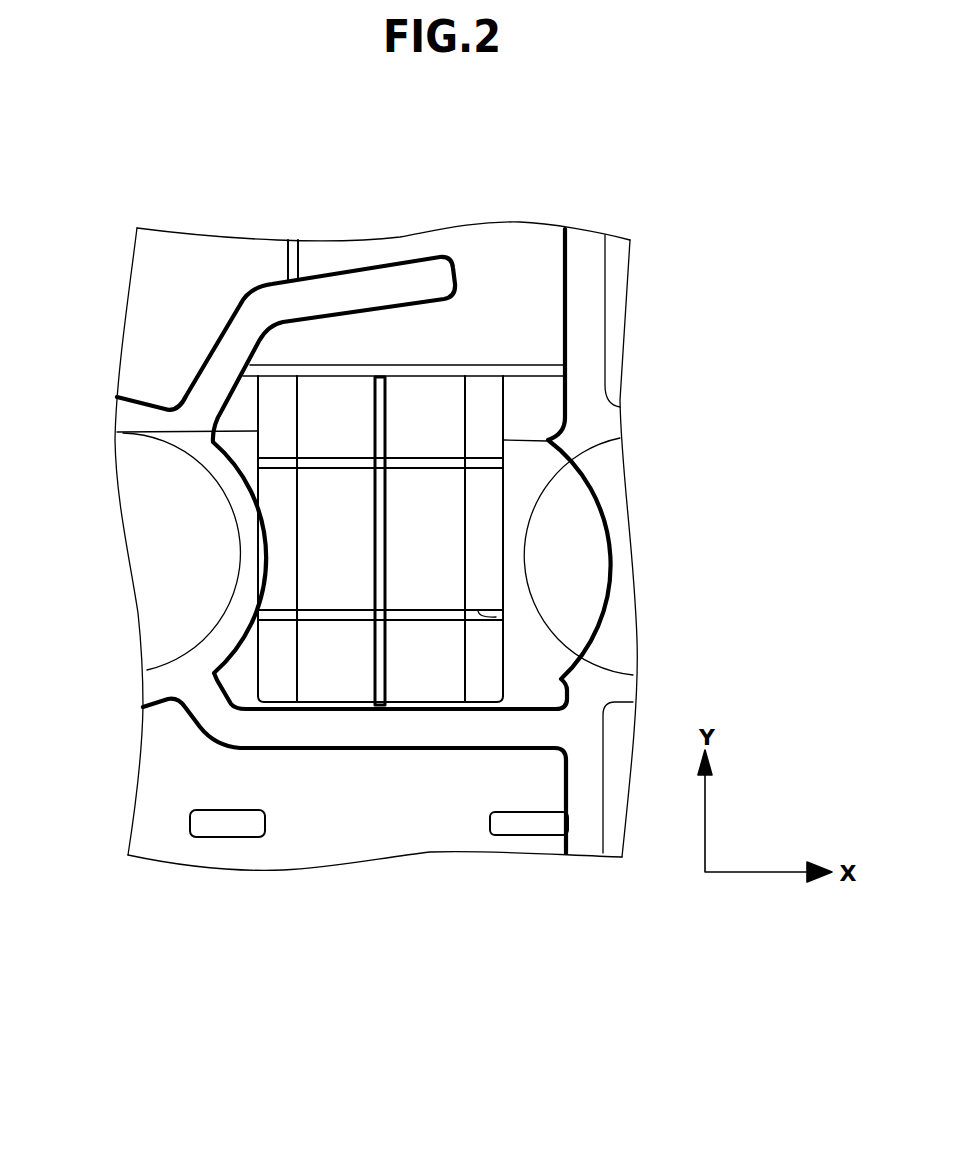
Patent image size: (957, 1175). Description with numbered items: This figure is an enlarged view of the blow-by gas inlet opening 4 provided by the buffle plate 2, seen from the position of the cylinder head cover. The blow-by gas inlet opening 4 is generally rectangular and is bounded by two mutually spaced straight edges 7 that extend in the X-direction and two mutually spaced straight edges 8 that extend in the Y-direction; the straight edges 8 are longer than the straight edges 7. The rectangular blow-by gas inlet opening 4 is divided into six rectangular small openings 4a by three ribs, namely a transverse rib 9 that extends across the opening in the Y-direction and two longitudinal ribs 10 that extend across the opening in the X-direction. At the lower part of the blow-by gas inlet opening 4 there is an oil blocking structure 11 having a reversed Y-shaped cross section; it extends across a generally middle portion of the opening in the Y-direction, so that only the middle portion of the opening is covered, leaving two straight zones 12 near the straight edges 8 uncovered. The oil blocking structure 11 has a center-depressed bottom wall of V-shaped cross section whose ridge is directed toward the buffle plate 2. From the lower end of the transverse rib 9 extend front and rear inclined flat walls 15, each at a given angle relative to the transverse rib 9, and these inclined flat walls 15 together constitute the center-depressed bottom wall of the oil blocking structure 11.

The buffle plate 2 is at (207, 265).
The blow-by gas inlet opening 4 is at (430, 397).
The rectangular small openings 4a is at (320, 404).
The straight edges 7 is at (340, 372).
The straight edges 8 is at (253, 430).
The transverse rib 9 is at (387, 512).
The longitudinal ribs 10 is at (338, 457).
The oil blocking structure 11 is at (445, 966).
The straight zones 12 is at (287, 688).
The inclined flat walls 15 is at (347, 688).